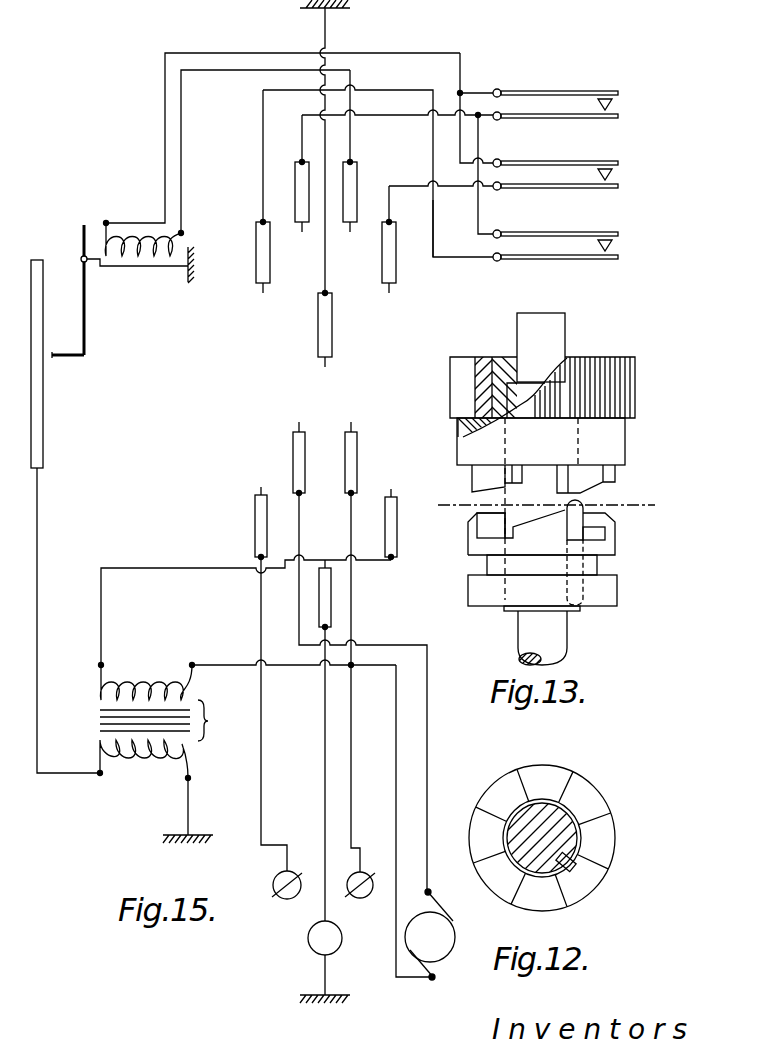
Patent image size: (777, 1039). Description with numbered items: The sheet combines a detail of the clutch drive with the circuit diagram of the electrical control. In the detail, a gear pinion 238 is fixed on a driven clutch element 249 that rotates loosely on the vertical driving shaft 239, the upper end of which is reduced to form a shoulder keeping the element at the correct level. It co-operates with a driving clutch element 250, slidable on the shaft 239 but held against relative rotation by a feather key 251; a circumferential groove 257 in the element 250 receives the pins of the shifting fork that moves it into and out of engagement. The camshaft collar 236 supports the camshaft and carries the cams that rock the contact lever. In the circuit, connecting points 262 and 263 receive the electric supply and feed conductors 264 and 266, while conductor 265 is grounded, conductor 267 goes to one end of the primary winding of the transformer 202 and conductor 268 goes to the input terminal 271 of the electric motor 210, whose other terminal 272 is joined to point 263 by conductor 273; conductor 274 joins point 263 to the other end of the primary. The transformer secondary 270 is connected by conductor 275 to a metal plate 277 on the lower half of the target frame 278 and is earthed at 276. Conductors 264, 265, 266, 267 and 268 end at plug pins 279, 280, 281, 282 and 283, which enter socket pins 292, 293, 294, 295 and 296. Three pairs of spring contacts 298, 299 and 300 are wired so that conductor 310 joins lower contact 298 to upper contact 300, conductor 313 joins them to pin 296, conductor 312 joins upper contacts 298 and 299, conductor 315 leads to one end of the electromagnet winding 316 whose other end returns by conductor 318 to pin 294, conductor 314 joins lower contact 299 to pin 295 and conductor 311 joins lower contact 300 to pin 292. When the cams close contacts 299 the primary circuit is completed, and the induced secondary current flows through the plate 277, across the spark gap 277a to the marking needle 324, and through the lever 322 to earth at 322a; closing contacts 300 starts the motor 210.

In FIG. 15, the transformer 202 is at (170, 720).
In FIG. 15, the electric motor 210 is at (430, 937).
In FIG. 13, the collar 236 is at (628, 357).
In FIG. 13, the gear pinion 238 is at (463, 356).
In FIG. 13, the vertical driving shaft 239 is at (557, 327).
In FIG. 12, the vertical driving shaft 239 is at (583, 828).
In FIG. 13, the driven clutch element 249 is at (458, 425).
In FIG. 13, the driving clutch element 250 is at (613, 527).
In FIG. 12, the driving clutch element 250 is at (580, 782).
In FIG. 13, the feather key 251 is at (575, 521).
In FIG. 12, the feather key 251 is at (580, 866).
In FIG. 13, the circumferential groove 257 is at (607, 565).
In FIG. 15, the connecting point 262 is at (283, 897).
In FIG. 15, the connecting point 263 is at (360, 898).
In FIG. 15, the conductor 264 is at (260, 765).
In FIG. 15, the conductor 265 is at (324, 716).
In FIG. 15, the conductor 266 is at (352, 612).
In FIG. 15, the conductor 267 is at (184, 567).
In FIG. 15, the conductor 268 is at (411, 645).
In FIG. 15, the transformer secondary 270 is at (145, 766).
In FIG. 15, the input terminal 271 is at (446, 896).
In FIG. 15, the input terminal 272 is at (430, 982).
In FIG. 15, the conductor 273 is at (396, 727).
In FIG. 15, the conductor 274 is at (222, 663).
In FIG. 15, the conductor 275 is at (40, 556).
In FIG. 15, the earth connection 276 is at (172, 833).
In FIG. 15, the metal plate 277 is at (44, 418).
In FIG. 15, the spark gap 277a is at (52, 358).
In FIG. 15, the target frame 278 is at (143, 682).
In FIG. 15, the plug pin 279 is at (258, 515).
In FIG. 15, the plug pin 280 is at (326, 565).
In FIG. 15, the plug pin 281 is at (350, 428).
In FIG. 15, the plug pin 282 is at (390, 515).
In FIG. 15, the plug pin 283 is at (298, 428).
In FIG. 15, the socket base pin 292 is at (260, 270).
In FIG. 15, the socket base pin 293 is at (316, 339).
In FIG. 15, the socket base pin 294 is at (350, 208).
In FIG. 15, the socket base pin 295 is at (390, 270).
In FIG. 15, the socket base pin 296 is at (295, 208).
In FIG. 15, the spring contacts 298 is at (572, 104).
In FIG. 15, the spring contacts 299 is at (572, 174).
In FIG. 15, the spring contacts 300 is at (572, 245).
In FIG. 15, the conductor 310 is at (482, 139).
In FIG. 15, the conductor 311 is at (435, 234).
In FIG. 15, the conductor 312 is at (460, 144).
In FIG. 15, the conductor 313 is at (385, 117).
In FIG. 15, the conductor 314 is at (404, 183).
In FIG. 15, the conductor 315 is at (236, 52).
In FIG. 15, the electromagnet winding 316 is at (153, 258).
In FIG. 15, the conductor 318 is at (183, 118).
In FIG. 15, the lever 322 is at (88, 305).
In FIG. 15, the earth connection 322a is at (190, 282).
In FIG. 15, the marking needle 324 is at (66, 354).